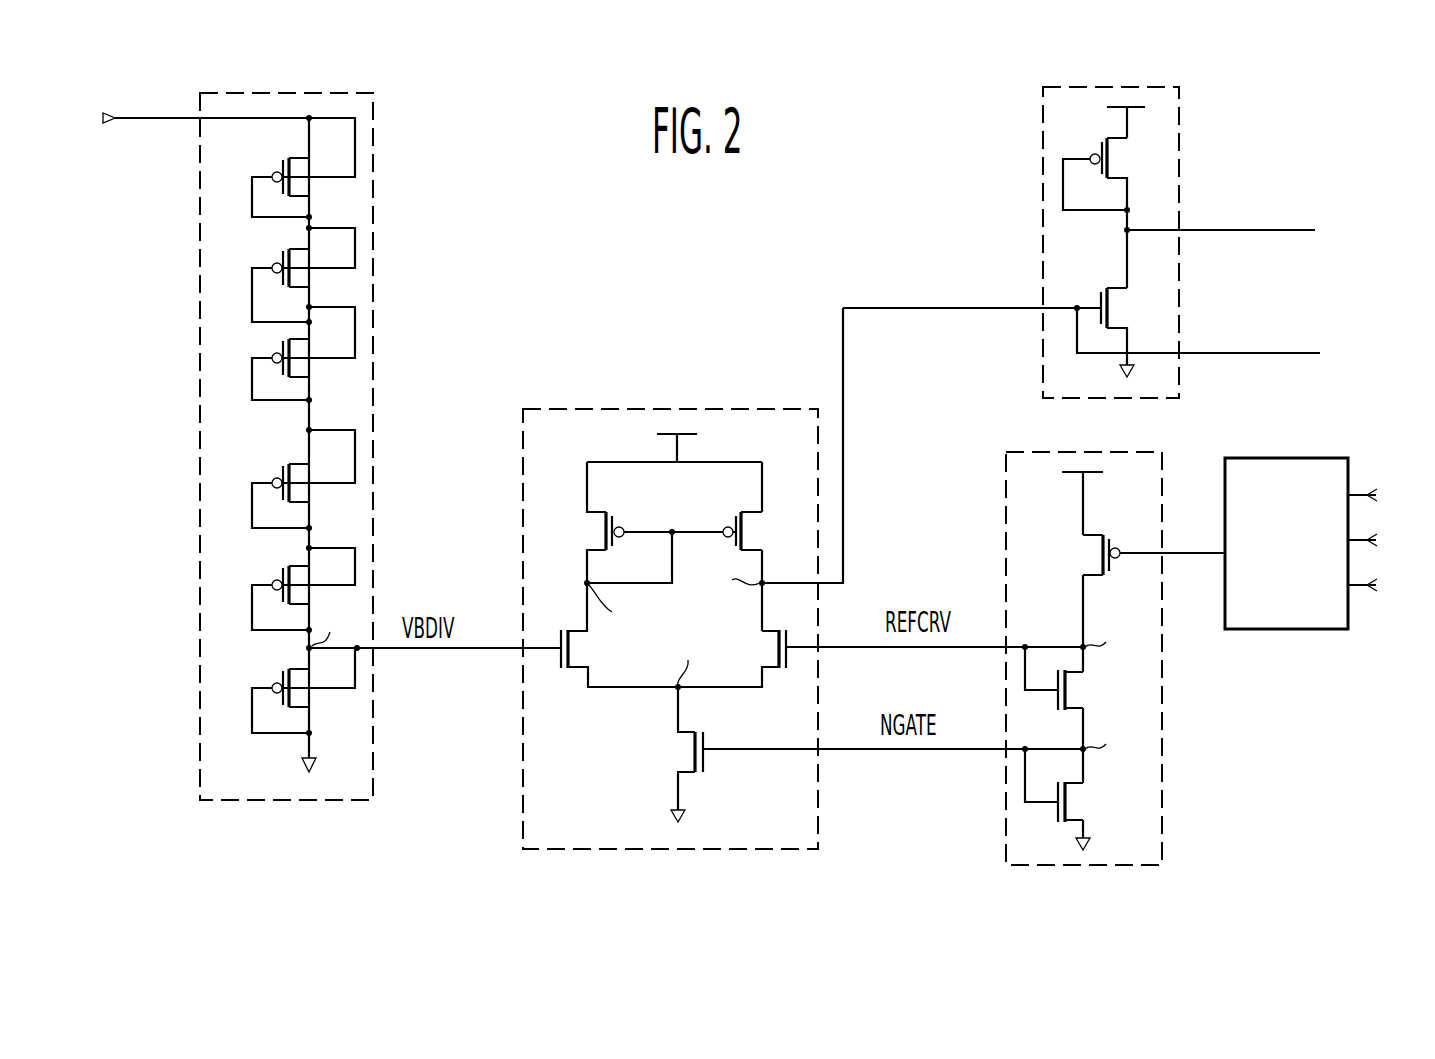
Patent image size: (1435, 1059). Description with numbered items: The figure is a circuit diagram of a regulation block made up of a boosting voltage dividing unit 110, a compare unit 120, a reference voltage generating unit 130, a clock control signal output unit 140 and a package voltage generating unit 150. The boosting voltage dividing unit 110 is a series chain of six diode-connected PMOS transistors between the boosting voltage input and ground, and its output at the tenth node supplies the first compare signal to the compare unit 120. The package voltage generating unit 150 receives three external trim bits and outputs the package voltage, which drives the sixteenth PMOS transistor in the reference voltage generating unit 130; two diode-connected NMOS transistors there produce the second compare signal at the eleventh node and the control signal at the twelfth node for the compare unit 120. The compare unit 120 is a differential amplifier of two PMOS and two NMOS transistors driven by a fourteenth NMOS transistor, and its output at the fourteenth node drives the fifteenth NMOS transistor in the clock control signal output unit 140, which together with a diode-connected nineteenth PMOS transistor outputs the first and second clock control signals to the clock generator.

The boosting voltage dividing unit 110 is at (373, 193).
The compare unit 120 is at (622, 409).
The reference voltage generating unit 130 is at (1006, 548).
The clock control signal output unit 140 is at (1043, 228).
The package voltage generating unit 150 is at (1303, 458).